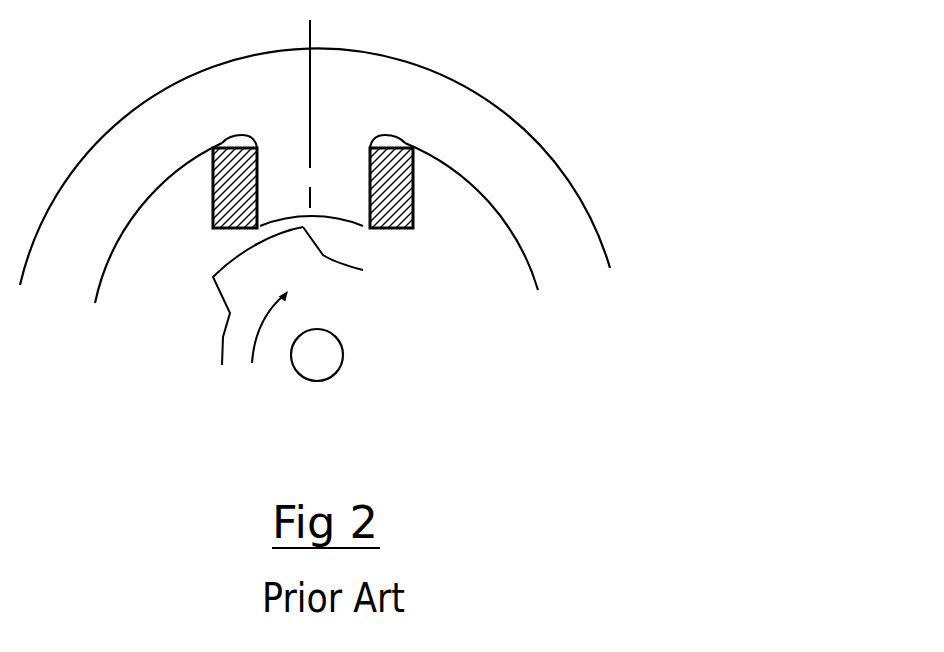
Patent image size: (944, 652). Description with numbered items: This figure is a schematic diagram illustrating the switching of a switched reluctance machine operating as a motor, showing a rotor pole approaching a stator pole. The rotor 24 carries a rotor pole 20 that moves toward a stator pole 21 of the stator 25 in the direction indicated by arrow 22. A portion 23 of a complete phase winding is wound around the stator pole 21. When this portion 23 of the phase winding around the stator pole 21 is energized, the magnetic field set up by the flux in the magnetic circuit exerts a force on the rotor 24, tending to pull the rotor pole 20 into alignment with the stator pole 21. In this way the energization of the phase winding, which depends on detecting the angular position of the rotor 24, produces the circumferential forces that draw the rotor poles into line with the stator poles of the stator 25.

The rotor pole 20 is at (252, 257).
The stator pole 21 is at (338, 163).
The arrow 22 is at (289, 321).
The portion of phase winding 23 is at (418, 202).
The rotor 24 is at (350, 322).
The stator 25 is at (470, 130).